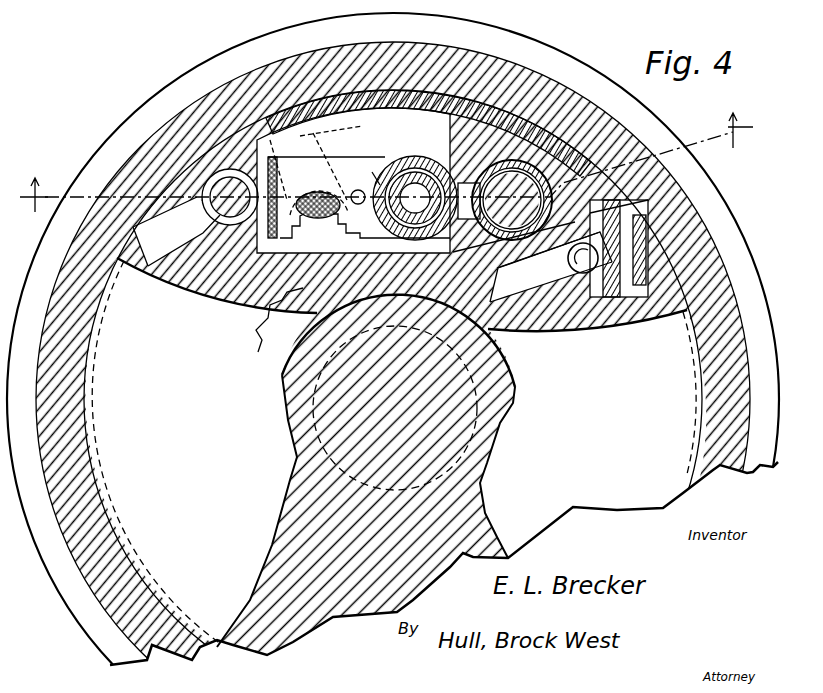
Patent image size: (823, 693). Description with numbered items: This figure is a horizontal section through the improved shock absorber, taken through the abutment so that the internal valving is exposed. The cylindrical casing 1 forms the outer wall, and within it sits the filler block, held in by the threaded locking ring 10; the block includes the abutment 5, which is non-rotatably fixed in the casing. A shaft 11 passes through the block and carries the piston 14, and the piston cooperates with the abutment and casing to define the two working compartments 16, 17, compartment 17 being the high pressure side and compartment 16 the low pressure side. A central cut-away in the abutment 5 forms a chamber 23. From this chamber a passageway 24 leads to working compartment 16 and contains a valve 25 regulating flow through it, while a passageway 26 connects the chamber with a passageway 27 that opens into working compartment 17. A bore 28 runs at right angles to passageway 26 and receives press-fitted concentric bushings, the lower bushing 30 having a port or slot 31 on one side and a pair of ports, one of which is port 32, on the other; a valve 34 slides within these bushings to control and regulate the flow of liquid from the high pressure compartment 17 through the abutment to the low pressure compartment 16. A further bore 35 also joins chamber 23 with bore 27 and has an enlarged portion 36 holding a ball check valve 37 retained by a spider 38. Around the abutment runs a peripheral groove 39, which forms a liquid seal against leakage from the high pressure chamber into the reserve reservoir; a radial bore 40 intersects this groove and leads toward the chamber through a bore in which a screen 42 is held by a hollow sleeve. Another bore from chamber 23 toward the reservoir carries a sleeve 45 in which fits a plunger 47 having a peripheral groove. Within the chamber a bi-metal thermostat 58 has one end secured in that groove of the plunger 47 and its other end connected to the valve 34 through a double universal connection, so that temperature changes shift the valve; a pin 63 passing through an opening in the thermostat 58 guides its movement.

The cylindrical casing 1 is at (248, 85).
The abutment 5 is at (386, 239).
The locking ring 10 is at (121, 128).
The shaft 11 is at (480, 385).
The piston 14 is at (278, 535).
The working compartment 16 is at (217, 343).
The working compartment 17 is at (587, 380).
The chamber 23 is at (396, 108).
The passageway 24 is at (176, 270).
The valve 25 is at (230, 292).
The passageway 26 is at (468, 110).
The passageway 27 is at (590, 213).
The bore 28 is at (528, 140).
The sleeve or bushing 30 is at (551, 267).
The port or slot 31 is at (569, 261).
The port 32 is at (510, 84).
The valve 34 is at (526, 229).
The bore or passageway 35 is at (540, 292).
The enlarged portion 36 is at (604, 285).
The ball check valve 37 is at (590, 285).
The spider 38 is at (613, 230).
The peripheral groove or passageway 39 is at (97, 337).
The radially disposed bore 40 is at (348, 128).
The screen 42 is at (316, 219).
The sleeve 45 is at (404, 154).
The plunger 47 is at (430, 168).
The bi-metal thermostat 58 is at (350, 162).
The pin 63 is at (382, 163).